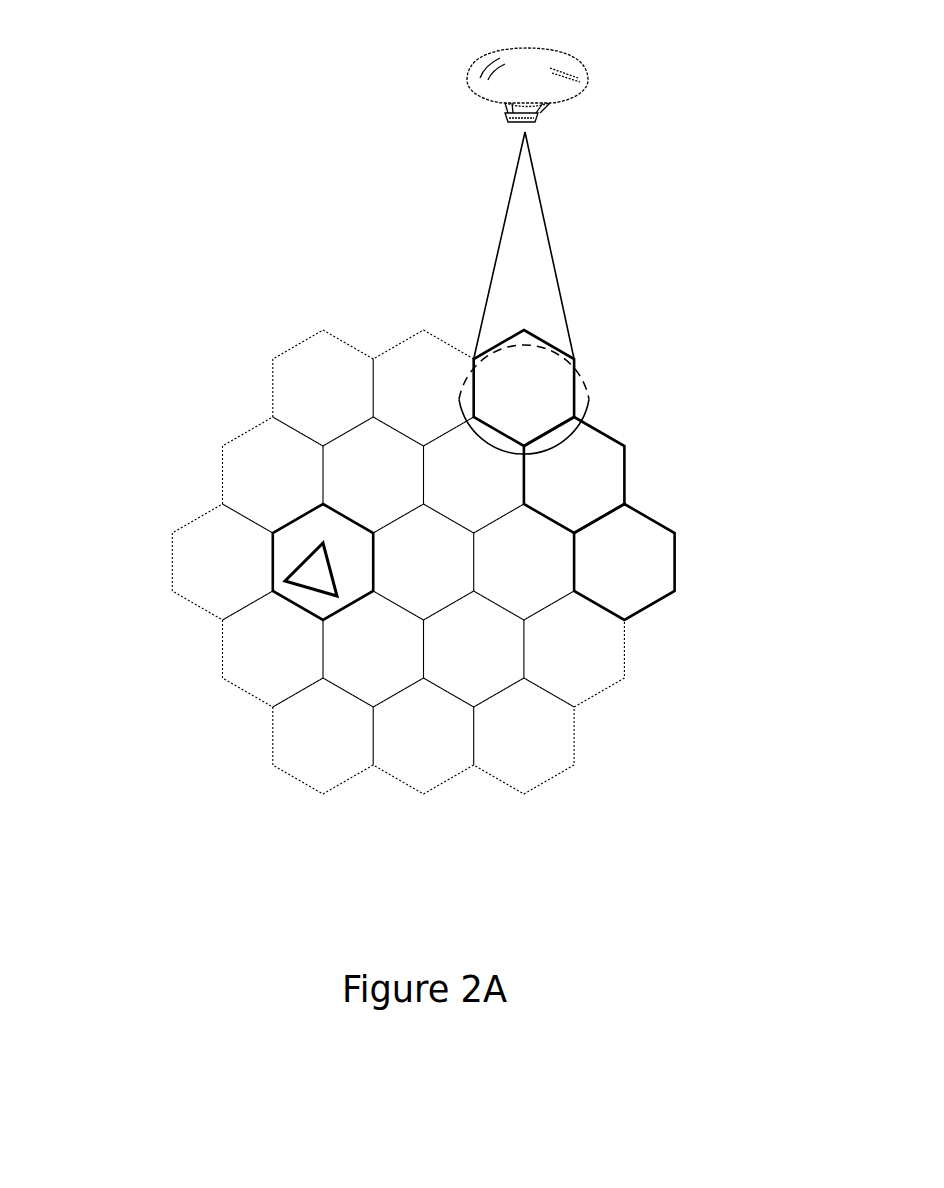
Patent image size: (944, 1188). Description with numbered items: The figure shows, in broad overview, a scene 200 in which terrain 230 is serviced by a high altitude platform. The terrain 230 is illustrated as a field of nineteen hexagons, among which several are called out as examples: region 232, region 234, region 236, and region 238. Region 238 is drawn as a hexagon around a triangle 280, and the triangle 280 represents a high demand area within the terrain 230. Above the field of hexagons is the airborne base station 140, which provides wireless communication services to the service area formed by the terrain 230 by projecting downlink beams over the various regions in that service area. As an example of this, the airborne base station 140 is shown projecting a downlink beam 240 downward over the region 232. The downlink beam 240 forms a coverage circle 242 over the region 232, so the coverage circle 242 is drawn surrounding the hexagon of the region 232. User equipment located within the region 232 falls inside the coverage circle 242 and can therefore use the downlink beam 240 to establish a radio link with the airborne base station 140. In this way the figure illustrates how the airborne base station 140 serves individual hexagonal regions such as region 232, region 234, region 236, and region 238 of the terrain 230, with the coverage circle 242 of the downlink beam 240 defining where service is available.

The scene 200 is at (143, 100).
The airborne base station 140 is at (540, 118).
The downlink beam 240 is at (547, 215).
The region 232 is at (573, 335).
The coverage circle 242 is at (585, 374).
The region 234 is at (593, 431).
The region 236 is at (655, 516).
The region 238 is at (272, 572).
The triangle 280 is at (320, 593).
The terrain 230 is at (262, 307).